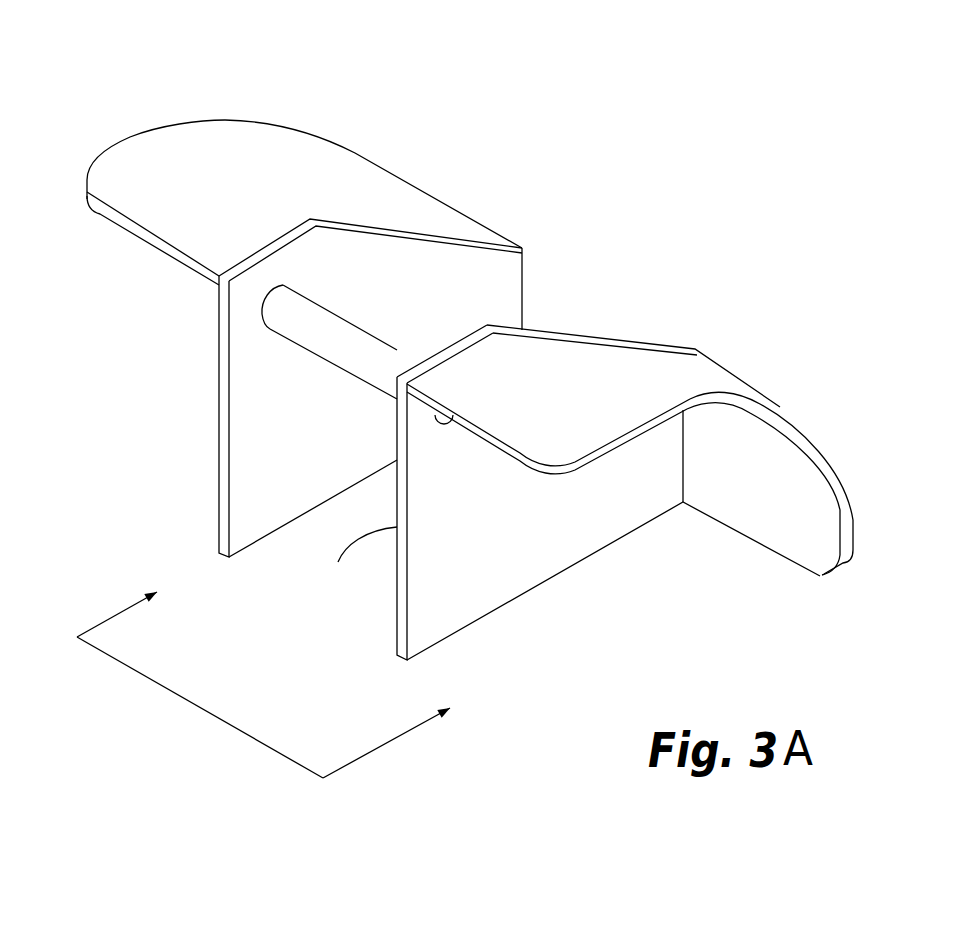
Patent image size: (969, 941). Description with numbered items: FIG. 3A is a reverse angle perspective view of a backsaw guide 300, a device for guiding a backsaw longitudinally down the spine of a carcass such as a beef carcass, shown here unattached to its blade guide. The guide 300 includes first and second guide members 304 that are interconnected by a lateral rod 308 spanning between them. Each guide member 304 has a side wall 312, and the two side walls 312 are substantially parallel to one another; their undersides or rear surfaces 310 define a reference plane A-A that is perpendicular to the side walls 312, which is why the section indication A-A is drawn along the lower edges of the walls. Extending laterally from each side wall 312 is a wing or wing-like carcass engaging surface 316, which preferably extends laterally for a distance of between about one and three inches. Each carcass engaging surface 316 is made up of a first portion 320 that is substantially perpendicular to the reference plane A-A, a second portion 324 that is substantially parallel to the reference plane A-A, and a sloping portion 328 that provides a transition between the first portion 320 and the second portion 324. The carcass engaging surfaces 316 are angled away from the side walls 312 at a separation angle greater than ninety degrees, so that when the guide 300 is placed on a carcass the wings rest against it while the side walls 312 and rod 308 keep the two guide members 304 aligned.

The backsaw guide 300 is at (640, 127).
The guide member 304 is at (682, 317).
The lateral rod 308 is at (303, 332).
The rear surface 310 is at (257, 547).
The side wall 312 is at (327, 473).
The carcass engaging surface 316 is at (122, 200).
The first portion 320 is at (827, 440).
The second portion 324 is at (172, 157).
The sloping portion 328 is at (325, 162).